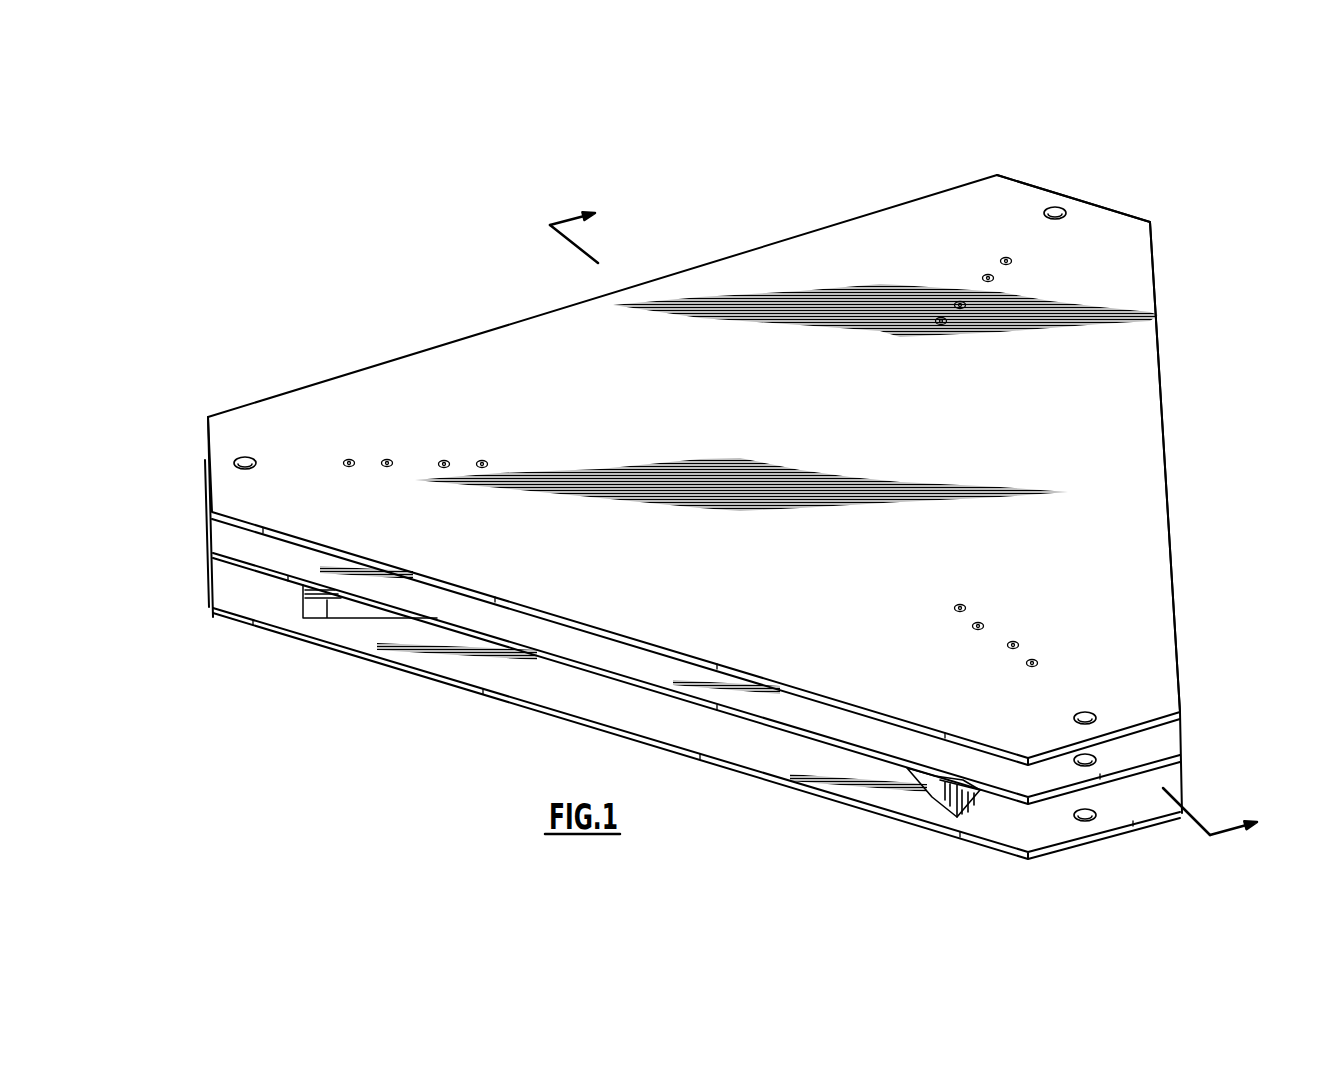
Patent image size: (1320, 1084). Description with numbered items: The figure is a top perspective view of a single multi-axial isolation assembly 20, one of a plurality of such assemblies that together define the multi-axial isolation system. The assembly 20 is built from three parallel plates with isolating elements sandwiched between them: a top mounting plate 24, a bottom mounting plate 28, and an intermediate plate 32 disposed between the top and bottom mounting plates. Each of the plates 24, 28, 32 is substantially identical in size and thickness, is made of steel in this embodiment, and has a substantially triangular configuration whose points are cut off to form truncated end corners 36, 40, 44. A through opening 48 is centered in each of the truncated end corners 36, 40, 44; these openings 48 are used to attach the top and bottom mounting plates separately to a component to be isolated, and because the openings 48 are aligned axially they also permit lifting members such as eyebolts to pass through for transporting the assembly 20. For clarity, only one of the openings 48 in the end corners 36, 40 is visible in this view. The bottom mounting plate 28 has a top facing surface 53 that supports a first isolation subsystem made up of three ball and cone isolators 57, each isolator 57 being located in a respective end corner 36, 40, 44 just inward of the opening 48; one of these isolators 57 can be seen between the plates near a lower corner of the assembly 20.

The multi-axial isolation assembly 20 is at (867, 166).
The top mounting plate 24 is at (402, 378).
The bottom mounting plate 28 is at (790, 788).
The intermediate plate 32 is at (870, 757).
The truncated end corner 36 is at (207, 470).
The truncated end corner 40 is at (1117, 211).
The truncated end corner 44 is at (1180, 737).
The through opening 48 is at (240, 458).
The top facing surface 53 is at (532, 687).
The ball and cone isolator 57 is at (970, 826).